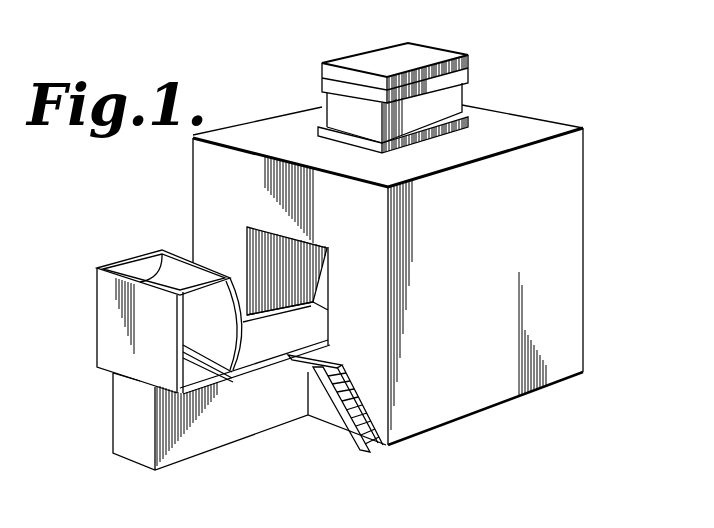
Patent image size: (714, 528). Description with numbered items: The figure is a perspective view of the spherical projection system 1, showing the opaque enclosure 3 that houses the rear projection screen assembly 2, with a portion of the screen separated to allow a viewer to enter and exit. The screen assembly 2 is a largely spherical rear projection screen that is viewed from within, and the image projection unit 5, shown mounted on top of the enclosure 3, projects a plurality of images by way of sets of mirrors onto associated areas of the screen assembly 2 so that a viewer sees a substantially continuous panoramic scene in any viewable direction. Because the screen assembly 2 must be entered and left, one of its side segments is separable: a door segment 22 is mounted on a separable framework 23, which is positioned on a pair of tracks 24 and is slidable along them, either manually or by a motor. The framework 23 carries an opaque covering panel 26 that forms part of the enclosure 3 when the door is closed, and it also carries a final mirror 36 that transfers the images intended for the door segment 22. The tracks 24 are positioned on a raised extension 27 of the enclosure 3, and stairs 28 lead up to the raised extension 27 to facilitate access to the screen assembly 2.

The spherical projection system 1 is at (137, 167).
The rear projection screen assembly 2 is at (322, 267).
The opaque enclosure 3 is at (583, 128).
The image projection unit 5 is at (466, 54).
The door segment 22 is at (165, 263).
The separable framework 23 is at (121, 257).
The tracks 24 is at (297, 352).
The opaque covering panel 26 is at (103, 340).
The raised extension 27 is at (230, 433).
The stairs 28 is at (350, 435).
The final mirror 36 is at (200, 349).